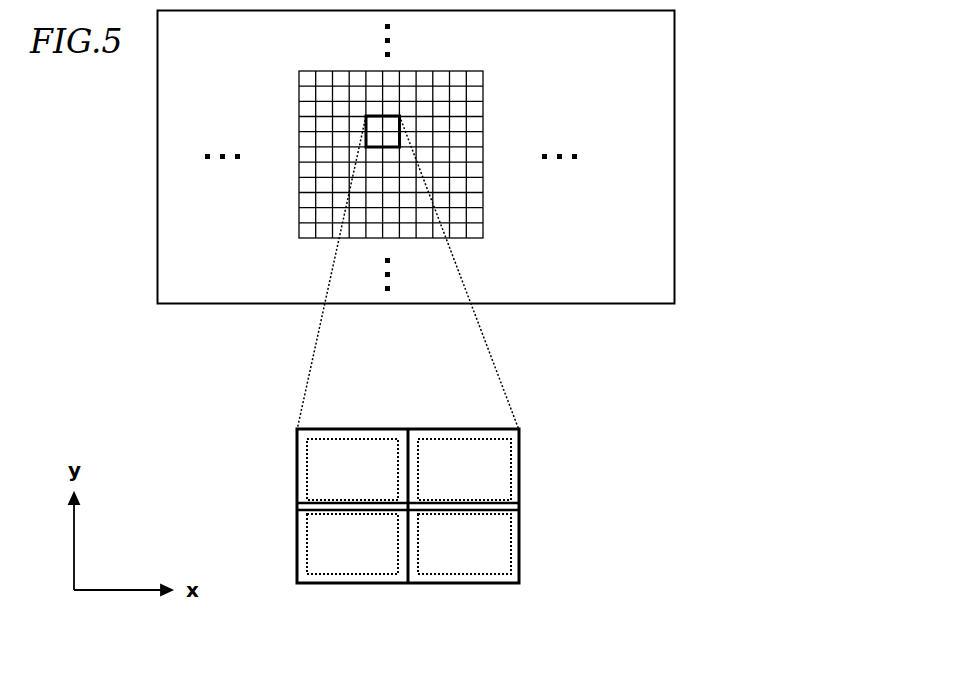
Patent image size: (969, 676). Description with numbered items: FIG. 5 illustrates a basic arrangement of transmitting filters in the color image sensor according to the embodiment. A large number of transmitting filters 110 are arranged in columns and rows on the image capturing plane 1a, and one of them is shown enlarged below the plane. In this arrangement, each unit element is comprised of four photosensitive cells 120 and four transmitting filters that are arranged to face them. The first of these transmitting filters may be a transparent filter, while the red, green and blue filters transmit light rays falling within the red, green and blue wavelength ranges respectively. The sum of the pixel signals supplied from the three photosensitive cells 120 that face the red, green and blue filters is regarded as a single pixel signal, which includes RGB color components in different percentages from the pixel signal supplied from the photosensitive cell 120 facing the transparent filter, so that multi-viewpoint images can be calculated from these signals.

The image capturing plane 1a is at (674, 108).
The transmitting filter 110 is at (473, 92).
The photosensitive cell 120 is at (513, 463).